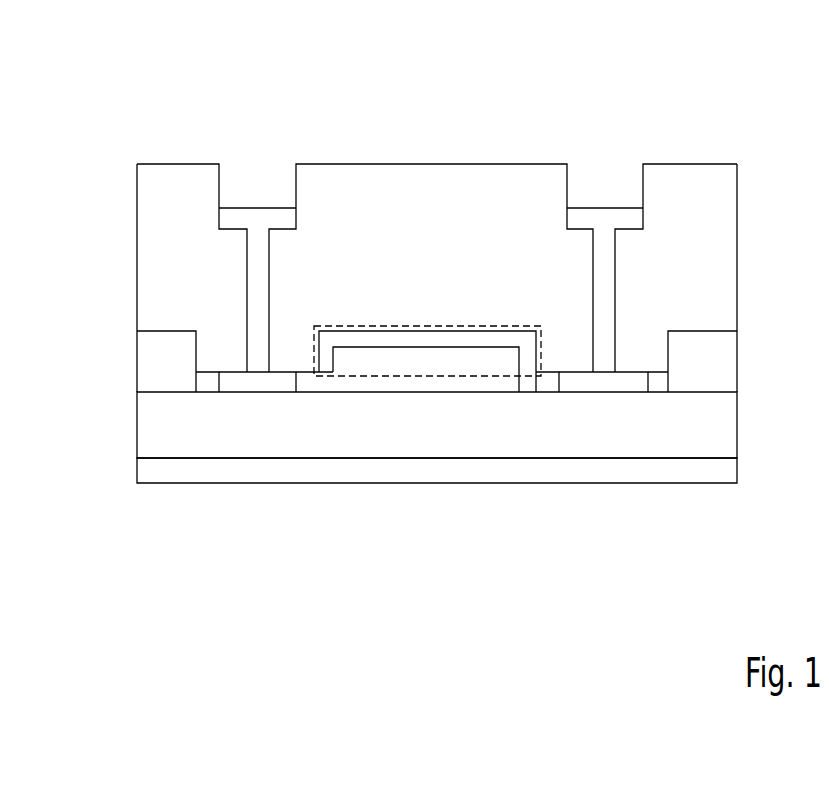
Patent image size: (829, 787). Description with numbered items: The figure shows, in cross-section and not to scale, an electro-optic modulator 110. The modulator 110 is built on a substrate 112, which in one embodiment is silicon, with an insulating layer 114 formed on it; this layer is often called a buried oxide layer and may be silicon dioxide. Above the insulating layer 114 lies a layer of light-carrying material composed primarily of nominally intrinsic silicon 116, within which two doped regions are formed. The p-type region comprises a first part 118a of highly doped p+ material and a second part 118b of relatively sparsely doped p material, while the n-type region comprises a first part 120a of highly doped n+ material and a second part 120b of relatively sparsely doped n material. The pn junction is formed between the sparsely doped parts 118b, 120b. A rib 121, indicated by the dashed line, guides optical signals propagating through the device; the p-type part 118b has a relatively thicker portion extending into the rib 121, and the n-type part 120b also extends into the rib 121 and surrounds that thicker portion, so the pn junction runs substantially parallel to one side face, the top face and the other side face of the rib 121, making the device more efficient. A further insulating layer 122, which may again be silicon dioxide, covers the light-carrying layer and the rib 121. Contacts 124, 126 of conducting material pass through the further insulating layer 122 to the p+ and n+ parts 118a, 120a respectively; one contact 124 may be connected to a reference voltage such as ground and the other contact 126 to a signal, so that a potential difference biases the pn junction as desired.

The electro-optic modulator 110 is at (252, 97).
The substrate 112 is at (148, 470).
The insulating layer 114 is at (147, 403).
The nominally intrinsic silicon 116 is at (152, 358).
The first part of p-type region 118a is at (252, 383).
The second part of p-type region 118b is at (207, 381).
The first part of n-type region 120a is at (613, 382).
The second part of n-type region 120b is at (530, 382).
The rib 121 is at (433, 376).
The further insulating layer 122 is at (152, 250).
The contact 124 is at (256, 210).
The contact 126 is at (603, 210).